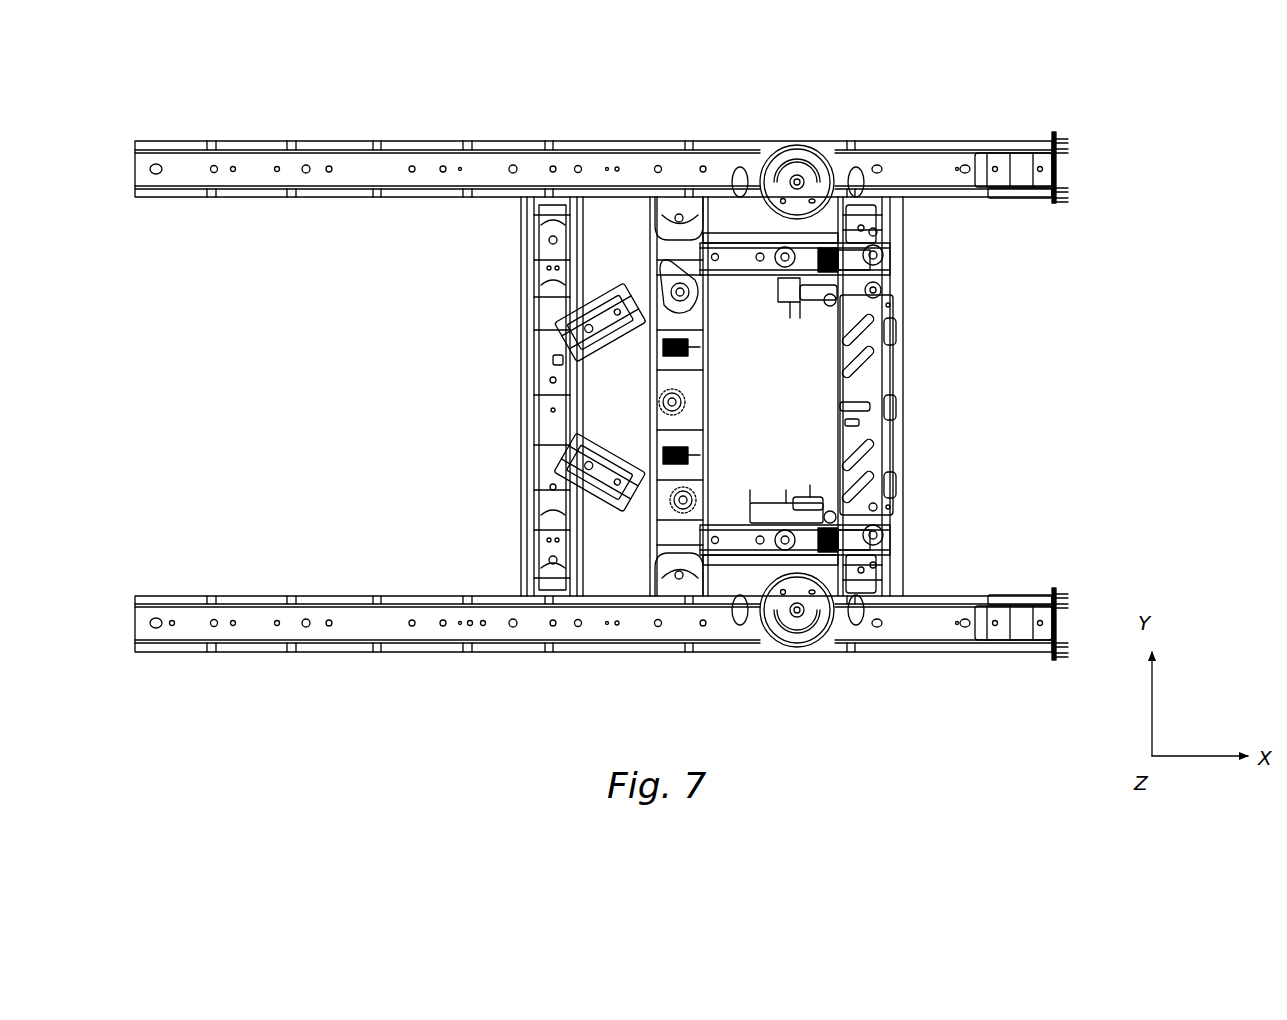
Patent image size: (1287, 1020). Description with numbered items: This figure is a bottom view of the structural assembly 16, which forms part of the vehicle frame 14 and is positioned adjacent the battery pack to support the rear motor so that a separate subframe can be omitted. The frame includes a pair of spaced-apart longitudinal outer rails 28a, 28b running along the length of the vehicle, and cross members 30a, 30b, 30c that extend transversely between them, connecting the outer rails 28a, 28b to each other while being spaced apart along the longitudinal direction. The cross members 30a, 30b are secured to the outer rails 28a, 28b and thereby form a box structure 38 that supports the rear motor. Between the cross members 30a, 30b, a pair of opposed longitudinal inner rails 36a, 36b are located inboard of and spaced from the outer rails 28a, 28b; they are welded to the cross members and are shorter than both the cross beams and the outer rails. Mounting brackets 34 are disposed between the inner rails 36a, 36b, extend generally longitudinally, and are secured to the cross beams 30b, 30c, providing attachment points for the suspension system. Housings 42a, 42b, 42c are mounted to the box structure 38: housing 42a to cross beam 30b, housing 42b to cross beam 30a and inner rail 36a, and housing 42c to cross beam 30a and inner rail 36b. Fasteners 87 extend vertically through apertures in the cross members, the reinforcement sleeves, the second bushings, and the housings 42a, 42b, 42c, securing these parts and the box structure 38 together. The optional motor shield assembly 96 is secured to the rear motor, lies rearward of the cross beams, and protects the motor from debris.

The vehicle frame 14 is at (316, 706).
The structural assembly 16 is at (1176, 214).
The longitudinal outer rail 28a is at (258, 175).
The longitudinal outer rail 28b is at (251, 611).
The cross member 30a is at (902, 572).
The cross member 30b is at (666, 563).
The cross member 30c is at (517, 495).
The mounting bracket 34 is at (586, 458).
The longitudinal inner rail 36a is at (740, 273).
The longitudinal inner rail 36b is at (737, 558).
The box structure 38 is at (960, 222).
The housing 42a is at (672, 285).
The housing 42b is at (848, 236).
The housing 42c is at (856, 566).
The fastener 87 is at (690, 299).
The motor shield assembly 96 is at (881, 376).